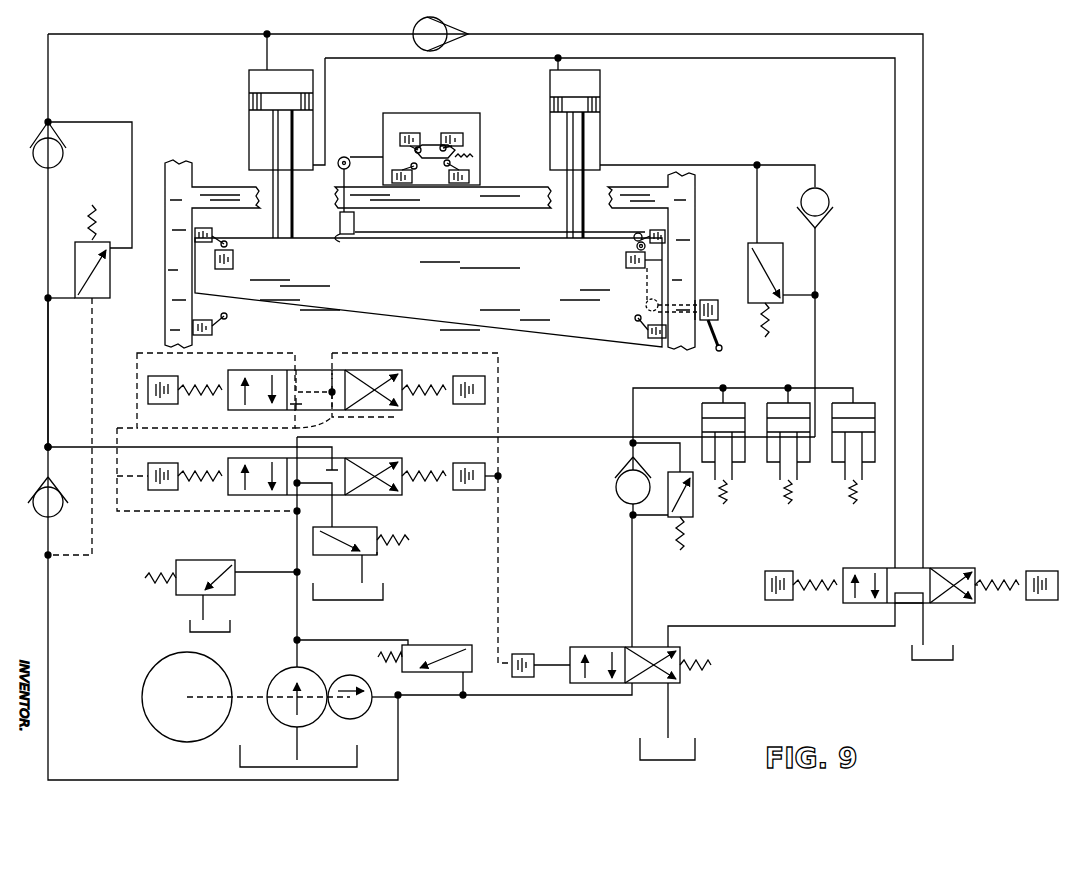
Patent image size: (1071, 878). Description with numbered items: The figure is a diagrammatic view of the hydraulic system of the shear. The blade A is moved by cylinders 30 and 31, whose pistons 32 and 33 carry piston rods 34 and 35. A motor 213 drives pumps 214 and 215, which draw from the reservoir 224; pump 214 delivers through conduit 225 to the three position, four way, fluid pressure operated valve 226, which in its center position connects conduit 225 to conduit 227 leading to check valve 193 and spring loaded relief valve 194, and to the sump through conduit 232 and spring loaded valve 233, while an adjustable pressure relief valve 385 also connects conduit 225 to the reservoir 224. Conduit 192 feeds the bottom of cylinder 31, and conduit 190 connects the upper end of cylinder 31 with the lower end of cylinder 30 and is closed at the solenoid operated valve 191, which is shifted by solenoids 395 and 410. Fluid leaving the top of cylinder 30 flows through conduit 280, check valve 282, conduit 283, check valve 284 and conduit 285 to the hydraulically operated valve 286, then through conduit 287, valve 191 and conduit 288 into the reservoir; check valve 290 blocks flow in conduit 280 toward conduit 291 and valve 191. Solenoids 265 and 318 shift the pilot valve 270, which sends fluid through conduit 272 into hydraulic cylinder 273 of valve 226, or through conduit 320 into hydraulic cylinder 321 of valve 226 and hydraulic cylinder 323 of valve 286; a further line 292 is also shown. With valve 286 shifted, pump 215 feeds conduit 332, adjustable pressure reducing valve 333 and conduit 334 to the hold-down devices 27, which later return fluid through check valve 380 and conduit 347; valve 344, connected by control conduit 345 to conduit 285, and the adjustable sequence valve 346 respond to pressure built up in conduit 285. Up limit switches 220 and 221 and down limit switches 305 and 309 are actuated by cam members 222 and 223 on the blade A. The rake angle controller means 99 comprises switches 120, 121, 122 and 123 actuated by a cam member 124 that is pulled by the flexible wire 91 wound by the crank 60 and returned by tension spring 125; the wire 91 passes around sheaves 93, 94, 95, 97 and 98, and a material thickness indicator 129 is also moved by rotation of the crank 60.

The hydraulic hold-down devices 27 is at (702, 412).
The cylinder member 30 is at (249, 142).
The cylinder member 31 is at (600, 146).
The piston 32 is at (249, 104).
The piston 33 is at (600, 105).
The piston rod 34 is at (292, 222).
The piston rod 35 is at (567, 222).
The crank 60 is at (722, 350).
The flexible wire 91 is at (435, 234).
The sheave 93 is at (646, 305).
The sheave 94 is at (634, 240).
The sheave 95 is at (365, 236).
The sheave 97 is at (335, 240).
The sheave 98 is at (350, 165).
The rake angle controller means 99 is at (484, 146).
The electric switch 120 is at (410, 133).
The electric switch 121 is at (452, 133).
The electric switch 122 is at (402, 183).
The electric switch 123 is at (462, 183).
The cam member 124 is at (432, 145).
The tension spring 125 is at (473, 157).
The material thickness indicator 129 is at (718, 310).
The conduit 190 is at (387, 58).
The solenoid operated valve 191 is at (978, 614).
The conduit 192 is at (700, 165).
The check valve 193 is at (826, 196).
The adjustable spring loaded relief valve 194 is at (748, 264).
The motor 213 is at (145, 668).
The pump 214 is at (325, 676).
The pump 215 is at (340, 714).
The blade up limit switch 220 is at (206, 228).
The blade up limit switch 221 is at (652, 230).
The cam member 222 is at (233, 262).
The cam member 223 is at (626, 262).
The reservoir 224 is at (370, 600).
The conduit 225 is at (225, 428).
The fluid pressure operated valve 226 is at (412, 494).
The conduit 227 is at (390, 437).
The conduit 232 is at (332, 522).
The spring loaded valve 233 is at (377, 552).
The solenoid 265 is at (466, 376).
The solenoid operated pilot valve 270 is at (312, 368).
The conduit 272 is at (137, 356).
The hydraulic cylinder 273 is at (166, 490).
The conduit 280 is at (48, 84).
The check valve 282 is at (30, 136).
The conduit 283 is at (48, 350).
The check valve 284 is at (40, 484).
The conduit 285 is at (48, 620).
The hydraulically operated valve 286 is at (690, 690).
The conduit 287 is at (812, 627).
The conduit 288 is at (925, 612).
The check valve 290 is at (455, 42).
The conduit 291 is at (923, 252).
The pilot line 292 is at (313, 426).
The down limit switch 305 is at (210, 312).
The down limit switch 309 is at (645, 332).
The solenoid 318 is at (166, 376).
The conduit 320 is at (370, 353).
The hydraulic cylinder 321 is at (498, 476).
The hydraulic cylinder 323 is at (528, 654).
The conduit 332 is at (632, 566).
The adjustable pressure reducing valve 333 is at (693, 515).
The conduit 334 is at (633, 416).
The adjustable hydraulic operated valve 344 is at (112, 274).
The control conduit 345 is at (92, 404).
The adjustable sequence valve 346 is at (450, 645).
The conduit 347 is at (668, 708).
The check valve 380 is at (616, 488).
The adjustable pressure relief valve 385 is at (170, 580).
The solenoid 395 is at (1035, 571).
The solenoid 410 is at (772, 571).
The blade A is at (525, 310).